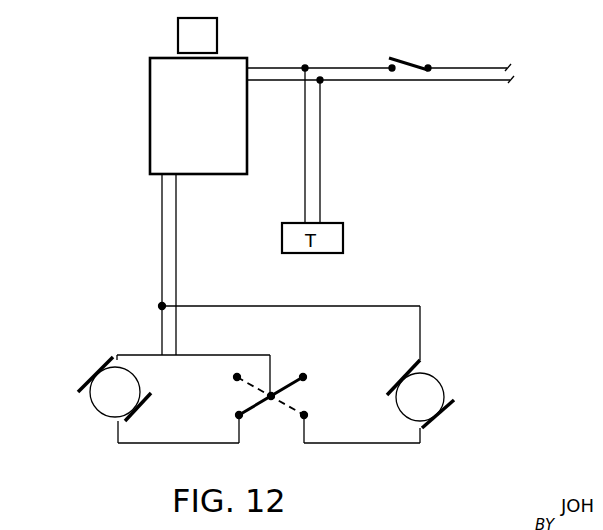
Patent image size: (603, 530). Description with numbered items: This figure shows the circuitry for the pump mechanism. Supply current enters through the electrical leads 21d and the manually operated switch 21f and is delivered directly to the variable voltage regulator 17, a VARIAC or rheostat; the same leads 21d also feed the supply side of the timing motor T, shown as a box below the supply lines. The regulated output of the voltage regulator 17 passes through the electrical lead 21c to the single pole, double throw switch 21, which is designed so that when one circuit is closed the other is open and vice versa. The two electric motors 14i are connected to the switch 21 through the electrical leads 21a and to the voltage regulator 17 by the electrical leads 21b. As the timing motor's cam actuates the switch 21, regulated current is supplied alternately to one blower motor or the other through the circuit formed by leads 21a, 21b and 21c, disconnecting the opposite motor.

The variable voltage regulator 17 is at (160, 82).
The electrical leads 21d is at (337, 68).
The manually operated switch 21f is at (410, 58).
The electrical lead 21c is at (176, 212).
The electrical leads 21b is at (140, 355).
The electric motors 14i is at (103, 380).
The electrical leads 21a is at (155, 443).
The single pole, double throw switch 21 is at (263, 398).